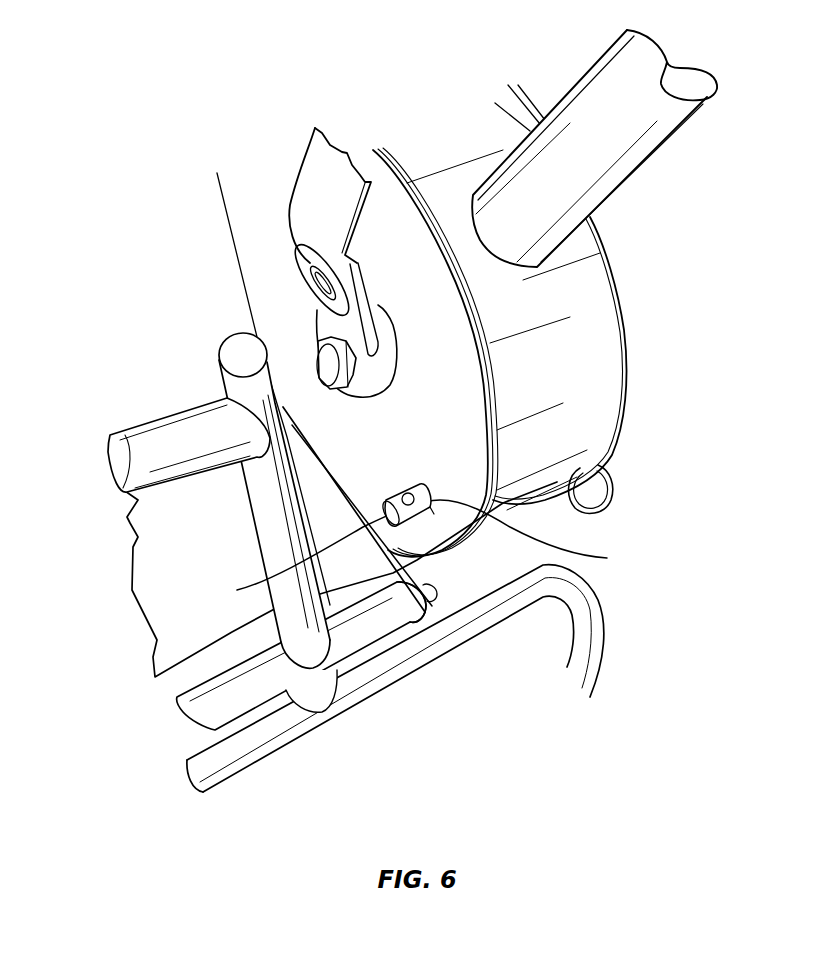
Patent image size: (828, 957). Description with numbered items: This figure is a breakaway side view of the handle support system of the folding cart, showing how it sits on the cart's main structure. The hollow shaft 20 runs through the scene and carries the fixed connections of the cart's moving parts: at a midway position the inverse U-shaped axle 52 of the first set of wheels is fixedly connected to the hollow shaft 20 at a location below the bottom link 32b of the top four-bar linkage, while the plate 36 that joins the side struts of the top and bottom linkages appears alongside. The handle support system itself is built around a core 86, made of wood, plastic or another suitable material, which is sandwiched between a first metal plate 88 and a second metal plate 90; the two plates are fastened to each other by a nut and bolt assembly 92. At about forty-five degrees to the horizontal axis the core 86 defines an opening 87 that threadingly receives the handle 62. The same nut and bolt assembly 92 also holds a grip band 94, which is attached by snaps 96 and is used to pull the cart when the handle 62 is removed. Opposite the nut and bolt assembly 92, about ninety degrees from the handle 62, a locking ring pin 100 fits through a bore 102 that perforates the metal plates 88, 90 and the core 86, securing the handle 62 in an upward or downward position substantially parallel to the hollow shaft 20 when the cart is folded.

The hollow shaft 20 is at (265, 482).
The plate 36 is at (188, 627).
The axle 52 is at (588, 635).
The handle 62 is at (588, 168).
The core 86 is at (541, 321).
The opening 87 is at (523, 270).
The first metal plate 88 is at (358, 473).
The second metal plate 90 is at (623, 303).
The nut and bolt assembly 92 is at (327, 367).
The grip band 94 is at (261, 217).
The snaps 96 is at (325, 283).
The locking ring pin 100 is at (260, 580).
The bore 102 is at (607, 558).
The bottom link 32b is at (407, 613).